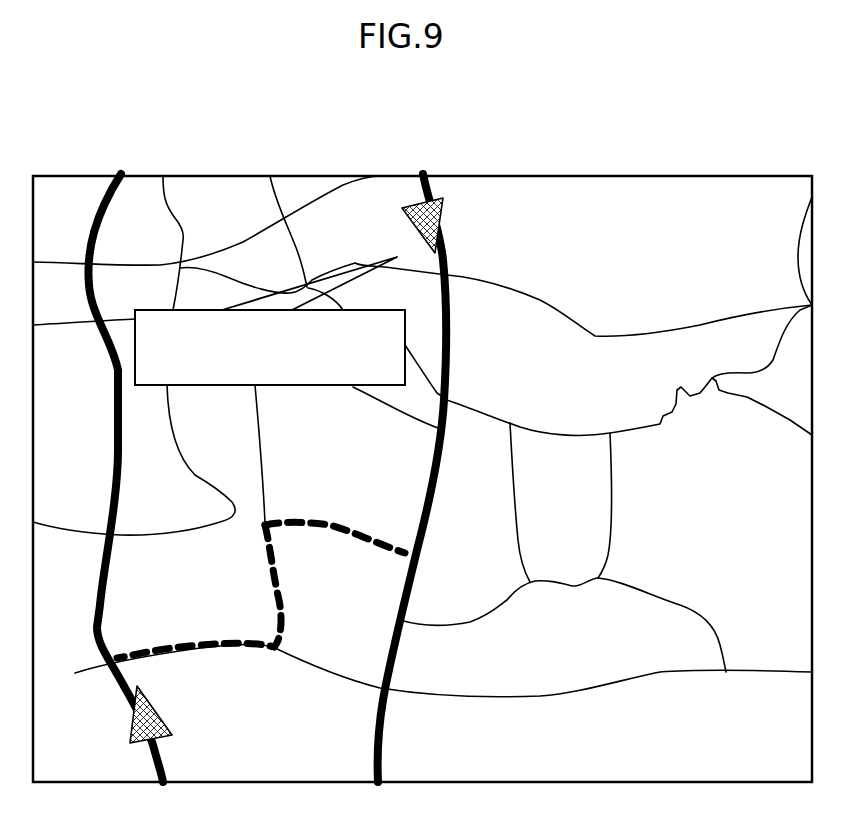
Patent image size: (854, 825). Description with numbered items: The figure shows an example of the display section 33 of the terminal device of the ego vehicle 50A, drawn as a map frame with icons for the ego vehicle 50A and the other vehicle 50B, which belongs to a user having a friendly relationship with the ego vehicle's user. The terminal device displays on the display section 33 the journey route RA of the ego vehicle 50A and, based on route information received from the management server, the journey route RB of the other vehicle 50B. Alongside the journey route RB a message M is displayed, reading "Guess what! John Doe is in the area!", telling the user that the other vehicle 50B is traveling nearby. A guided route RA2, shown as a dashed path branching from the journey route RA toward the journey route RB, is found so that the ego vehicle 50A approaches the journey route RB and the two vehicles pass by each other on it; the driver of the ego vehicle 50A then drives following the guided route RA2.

The display section 33 is at (640, 176).
The ego vehicle 50A is at (155, 705).
The other vehicle 50B is at (440, 205).
The journey route RA is at (100, 600).
The journey route RB is at (398, 648).
The guided route RA2 is at (330, 525).
The message M is at (310, 387).